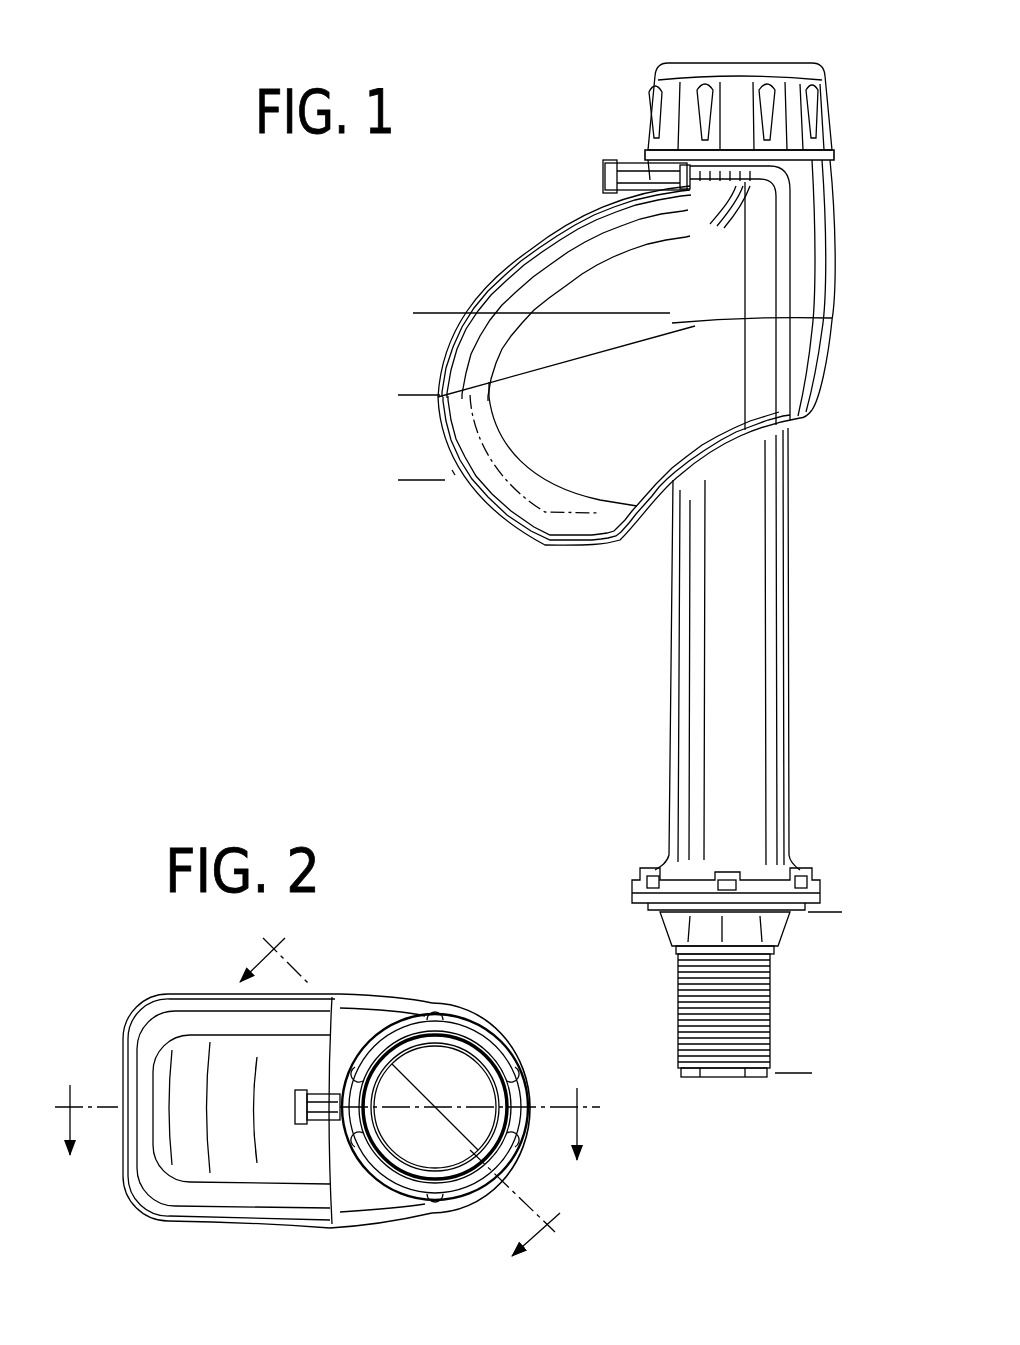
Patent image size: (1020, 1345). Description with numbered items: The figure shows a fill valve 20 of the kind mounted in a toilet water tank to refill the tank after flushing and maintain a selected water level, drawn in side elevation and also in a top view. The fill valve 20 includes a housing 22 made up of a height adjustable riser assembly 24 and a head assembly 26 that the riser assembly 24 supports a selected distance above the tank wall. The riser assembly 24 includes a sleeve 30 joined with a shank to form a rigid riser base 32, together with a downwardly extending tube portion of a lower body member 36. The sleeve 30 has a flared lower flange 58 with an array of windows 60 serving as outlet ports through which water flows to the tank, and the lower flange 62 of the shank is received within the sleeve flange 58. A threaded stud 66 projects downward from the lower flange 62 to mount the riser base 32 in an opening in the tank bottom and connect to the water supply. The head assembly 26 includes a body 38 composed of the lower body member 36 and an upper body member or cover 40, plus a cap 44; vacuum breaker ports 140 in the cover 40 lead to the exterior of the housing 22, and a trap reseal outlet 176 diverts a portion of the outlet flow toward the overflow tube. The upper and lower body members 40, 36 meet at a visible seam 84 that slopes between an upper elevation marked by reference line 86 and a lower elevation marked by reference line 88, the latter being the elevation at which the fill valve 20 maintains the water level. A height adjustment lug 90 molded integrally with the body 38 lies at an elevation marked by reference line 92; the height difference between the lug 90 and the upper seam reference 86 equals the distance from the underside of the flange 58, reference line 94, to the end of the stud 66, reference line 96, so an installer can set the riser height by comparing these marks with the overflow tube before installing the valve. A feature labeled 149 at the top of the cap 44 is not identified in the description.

In FIG. 1, the fill valve 20 is at (438, 204).
In FIG. 2, the fill valve 20 is at (456, 977).
In FIG. 1, the housing 22 is at (836, 345).
In FIG. 2, the housing 22 is at (152, 1214).
In FIG. 1, the height adjustable riser assembly 24 is at (828, 678).
In FIG. 1, the head assembly 26 is at (870, 188).
In FIG. 2, the head assembly 26 is at (130, 1019).
In FIG. 1, the sleeve 30 is at (747, 691).
In FIG. 1, the riser base 32 is at (670, 745).
In FIG. 1, the lower body member 36 is at (631, 419).
In FIG. 1, the body 38 is at (517, 262).
In FIG. 2, the body 38 is at (315, 1230).
In FIG. 1, the upper body member or cover 40 is at (688, 292).
In FIG. 2, the upper body member or cover 40 is at (250, 1096).
In FIG. 1, the cap 44 is at (796, 66).
In FIG. 2, the cap 44 is at (487, 1113).
In FIG. 1, the flared lower flange 58 is at (640, 887).
In FIG. 1, the windows 60 is at (762, 872).
In FIG. 1, the lower flange 62 is at (641, 906).
In FIG. 1, the threaded stud 66 is at (700, 1000).
In FIG. 1, the seam 84 is at (682, 332).
In FIG. 1, the reference line 86 is at (450, 313).
In FIG. 1, the reference line 88 is at (410, 396).
In FIG. 1, the height adjustment lug 90 is at (453, 472).
In FIG. 1, the reference line 92 is at (413, 481).
In FIG. 1, the reference line 94 is at (835, 913).
In FIG. 1, the reference line 96 is at (800, 1074).
In FIG. 1, the vacuum breaker ports 140 is at (740, 298).
In FIG. 1, the cap top 149 is at (740, 64).
In FIG. 1, the trap reseal outlet 176 is at (605, 176).
In FIG. 2, the trap reseal outlet 176 is at (317, 1107).